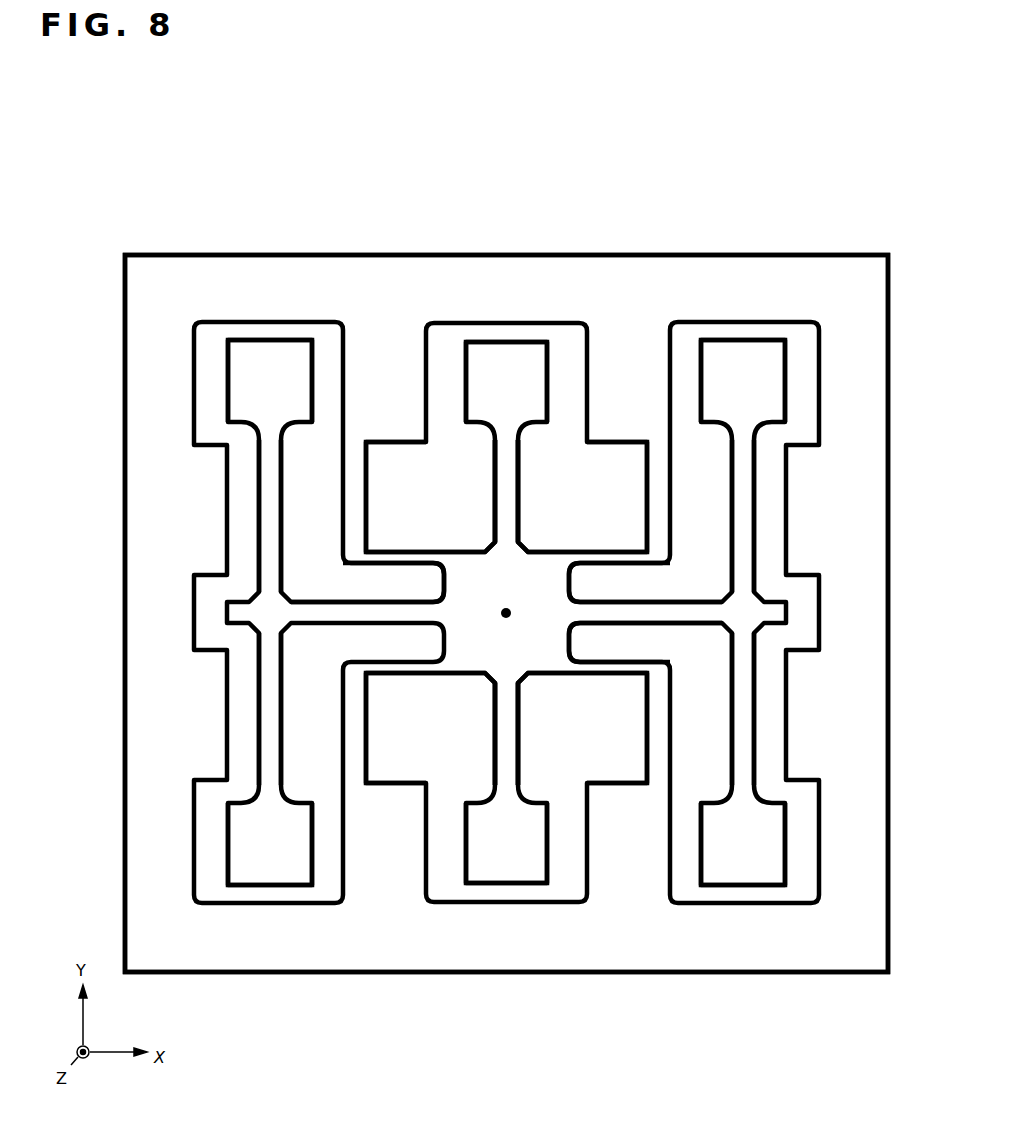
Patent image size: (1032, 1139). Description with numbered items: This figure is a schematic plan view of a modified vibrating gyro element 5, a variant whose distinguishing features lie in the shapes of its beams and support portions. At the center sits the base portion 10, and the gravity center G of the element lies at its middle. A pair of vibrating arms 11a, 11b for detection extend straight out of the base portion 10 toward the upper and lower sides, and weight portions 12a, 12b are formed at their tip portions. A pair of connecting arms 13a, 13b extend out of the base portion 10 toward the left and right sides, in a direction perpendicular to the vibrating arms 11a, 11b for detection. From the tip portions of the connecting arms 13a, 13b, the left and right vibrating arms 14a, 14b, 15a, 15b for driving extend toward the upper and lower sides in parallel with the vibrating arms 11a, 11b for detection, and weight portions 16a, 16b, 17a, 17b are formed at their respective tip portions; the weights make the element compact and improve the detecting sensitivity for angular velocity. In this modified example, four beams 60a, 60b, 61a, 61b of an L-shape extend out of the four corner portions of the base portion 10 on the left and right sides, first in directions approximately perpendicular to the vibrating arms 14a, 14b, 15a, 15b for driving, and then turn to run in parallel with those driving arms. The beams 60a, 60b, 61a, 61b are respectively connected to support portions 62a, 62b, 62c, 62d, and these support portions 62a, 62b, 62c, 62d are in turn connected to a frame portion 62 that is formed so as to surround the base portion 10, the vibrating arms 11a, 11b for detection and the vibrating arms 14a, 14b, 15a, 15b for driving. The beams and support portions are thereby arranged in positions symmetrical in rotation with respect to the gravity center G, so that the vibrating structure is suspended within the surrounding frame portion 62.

The vibrating gyro element 5 is at (866, 208).
The frame portion 62 is at (262, 266).
The support portion 62a is at (382, 378).
The support portion 62b is at (625, 378).
The support portion 62c is at (384, 852).
The support portion 62d is at (628, 852).
The base portion 10 is at (557, 643).
The vibrating arm for detection 11a is at (508, 465).
The vibrating arm for detection 11b is at (508, 755).
The weight portion 12a is at (502, 345).
The weight portion 12b is at (503, 878).
The connecting arm 13a is at (312, 612).
The connecting arm 13b is at (695, 612).
The vibrating arm for driving 14a is at (268, 508).
The vibrating arm for driving 14b is at (268, 710).
The vibrating arm for driving 15a is at (745, 508).
The vibrating arm for driving 15b is at (745, 710).
The weight portion 16a is at (238, 378).
The weight portion 16b is at (238, 841).
The weight portion 17a is at (775, 378).
The weight portion 17b is at (775, 841).
The beam 60a is at (357, 503).
The beam 60b is at (652, 503).
The beam 61a is at (357, 725).
The beam 61b is at (652, 725).
The gravity center G is at (505, 597).